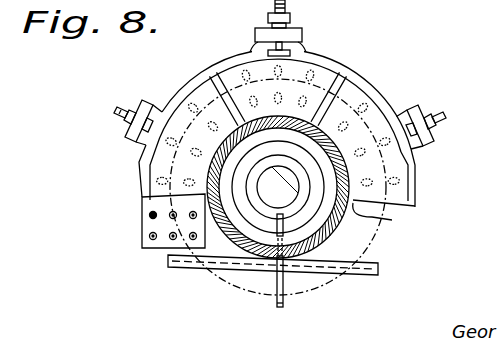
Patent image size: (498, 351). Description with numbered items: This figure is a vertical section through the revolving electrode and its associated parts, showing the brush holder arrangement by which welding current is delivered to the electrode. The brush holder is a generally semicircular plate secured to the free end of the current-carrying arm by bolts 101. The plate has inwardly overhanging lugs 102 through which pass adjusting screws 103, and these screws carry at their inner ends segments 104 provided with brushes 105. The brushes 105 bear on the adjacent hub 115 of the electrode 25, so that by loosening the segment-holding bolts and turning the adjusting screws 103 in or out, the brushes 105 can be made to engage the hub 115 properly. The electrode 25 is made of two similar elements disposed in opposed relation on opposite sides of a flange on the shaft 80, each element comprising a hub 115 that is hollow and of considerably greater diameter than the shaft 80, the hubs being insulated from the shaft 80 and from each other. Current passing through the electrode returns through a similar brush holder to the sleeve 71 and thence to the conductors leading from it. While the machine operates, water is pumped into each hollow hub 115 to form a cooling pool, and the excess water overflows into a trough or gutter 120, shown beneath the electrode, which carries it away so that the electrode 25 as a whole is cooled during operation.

The segment 104 is at (232, 77).
The adjusting screw 103 is at (113, 110).
The lug 102 is at (127, 143).
The bolt 101 is at (150, 237).
The electrode 25 is at (369, 247).
The hub 115 is at (236, 220).
The shaft 80 is at (272, 196).
The sleeve 71 is at (272, 276).
The trough 120 is at (354, 276).
The brush 105 is at (392, 220).